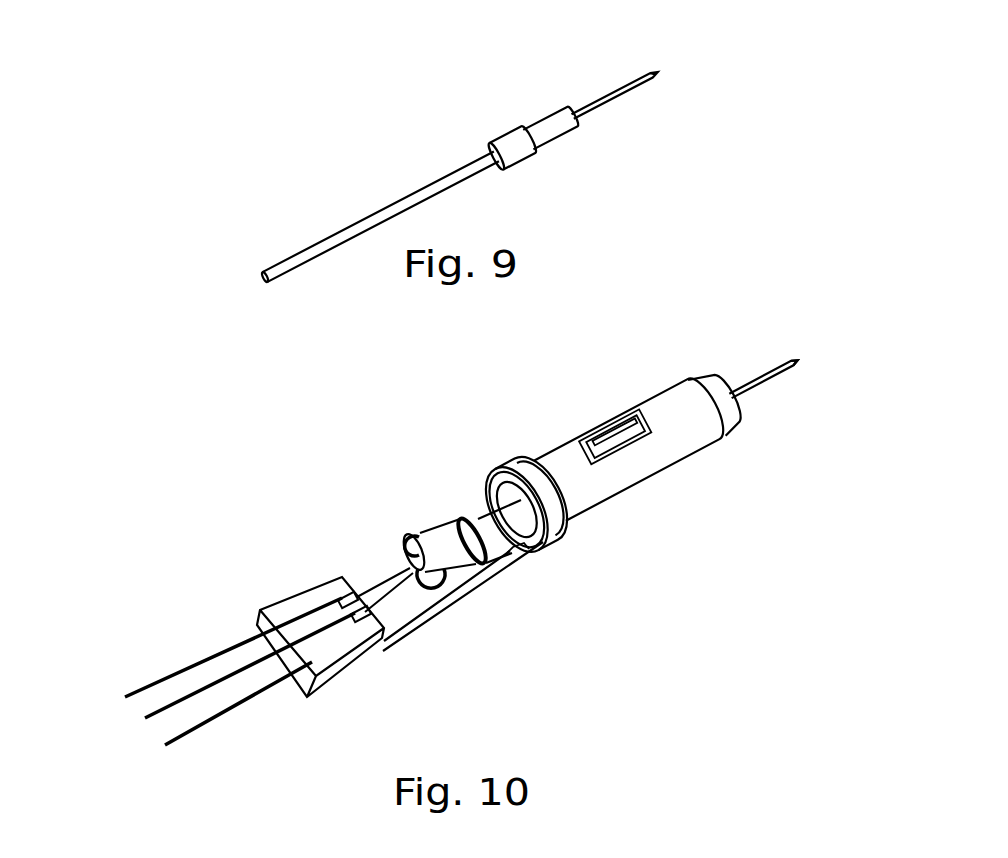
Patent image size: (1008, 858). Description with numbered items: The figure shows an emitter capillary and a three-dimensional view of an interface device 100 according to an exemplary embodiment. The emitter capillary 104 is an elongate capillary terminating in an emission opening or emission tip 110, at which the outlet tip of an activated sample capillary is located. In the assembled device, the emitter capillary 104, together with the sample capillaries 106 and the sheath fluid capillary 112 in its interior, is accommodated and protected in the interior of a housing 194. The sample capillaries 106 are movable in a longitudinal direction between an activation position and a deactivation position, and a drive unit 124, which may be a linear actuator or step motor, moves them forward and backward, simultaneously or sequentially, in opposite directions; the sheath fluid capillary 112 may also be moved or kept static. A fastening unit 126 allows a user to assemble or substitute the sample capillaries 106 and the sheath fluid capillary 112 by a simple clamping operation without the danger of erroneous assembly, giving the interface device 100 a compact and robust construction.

In FIG. 10, the interface device 100 is at (455, 514).
In FIG. 9, the emitter capillary 104 is at (466, 129).
In FIG. 10, the emitter capillary 104 is at (760, 390).
In FIG. 10, the sample capillaries 106 is at (181, 667).
In FIG. 9, the emission tip 110 is at (658, 72).
In FIG. 10, the emission tip 110 is at (797, 358).
In FIG. 10, the sheath fluid capillary 112 is at (158, 707).
In FIG. 10, the drive unit 124 is at (324, 656).
In FIG. 10, the fastening unit 126 is at (338, 589).
In FIG. 10, the housing 194 is at (621, 471).